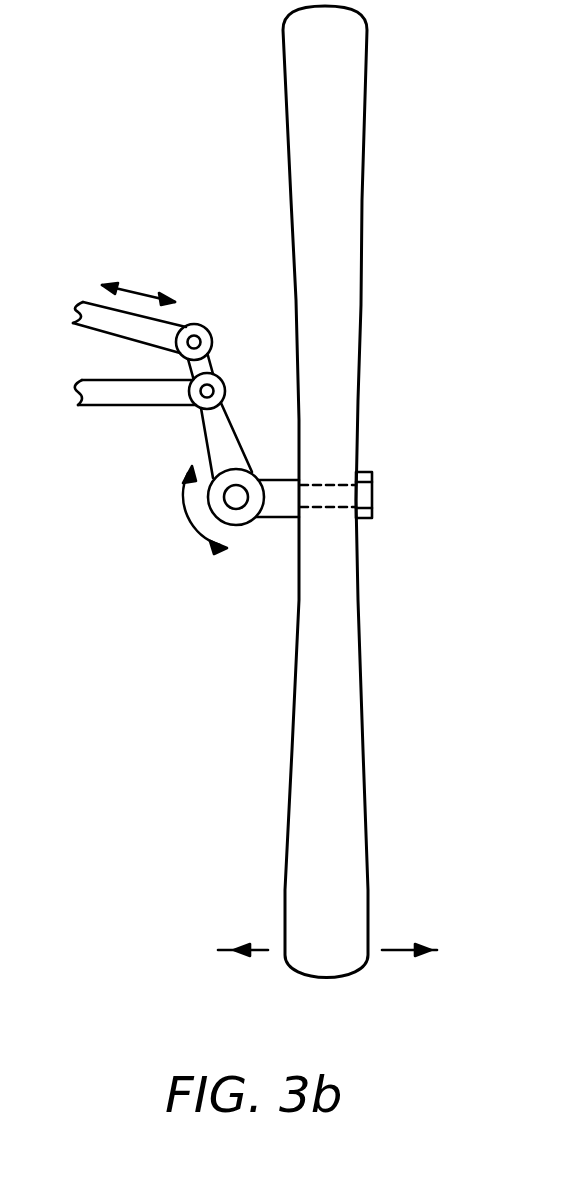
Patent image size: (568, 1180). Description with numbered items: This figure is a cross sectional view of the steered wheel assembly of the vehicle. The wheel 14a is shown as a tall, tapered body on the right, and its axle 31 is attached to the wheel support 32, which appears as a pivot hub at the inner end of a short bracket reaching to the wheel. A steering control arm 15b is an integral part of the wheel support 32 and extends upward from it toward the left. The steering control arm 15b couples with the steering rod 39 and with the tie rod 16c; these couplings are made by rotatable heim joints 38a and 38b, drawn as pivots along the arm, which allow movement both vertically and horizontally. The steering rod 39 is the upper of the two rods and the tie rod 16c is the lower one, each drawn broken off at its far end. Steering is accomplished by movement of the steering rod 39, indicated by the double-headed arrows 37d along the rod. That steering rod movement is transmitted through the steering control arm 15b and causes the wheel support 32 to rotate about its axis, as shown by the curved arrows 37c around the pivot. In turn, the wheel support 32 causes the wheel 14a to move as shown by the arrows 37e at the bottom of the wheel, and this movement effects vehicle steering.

The wheel 14a is at (362, 305).
The axle 31 is at (373, 497).
The wheel support 32 is at (250, 522).
The steering control arm 15b is at (207, 443).
The heim joint 38b is at (222, 315).
The heim joint 38a is at (242, 368).
The steering rod 39 is at (82, 300).
The tie rod 16c is at (78, 393).
The arrows 37d is at (138, 290).
The arrows 37c is at (187, 523).
The arrows 37e is at (262, 950).